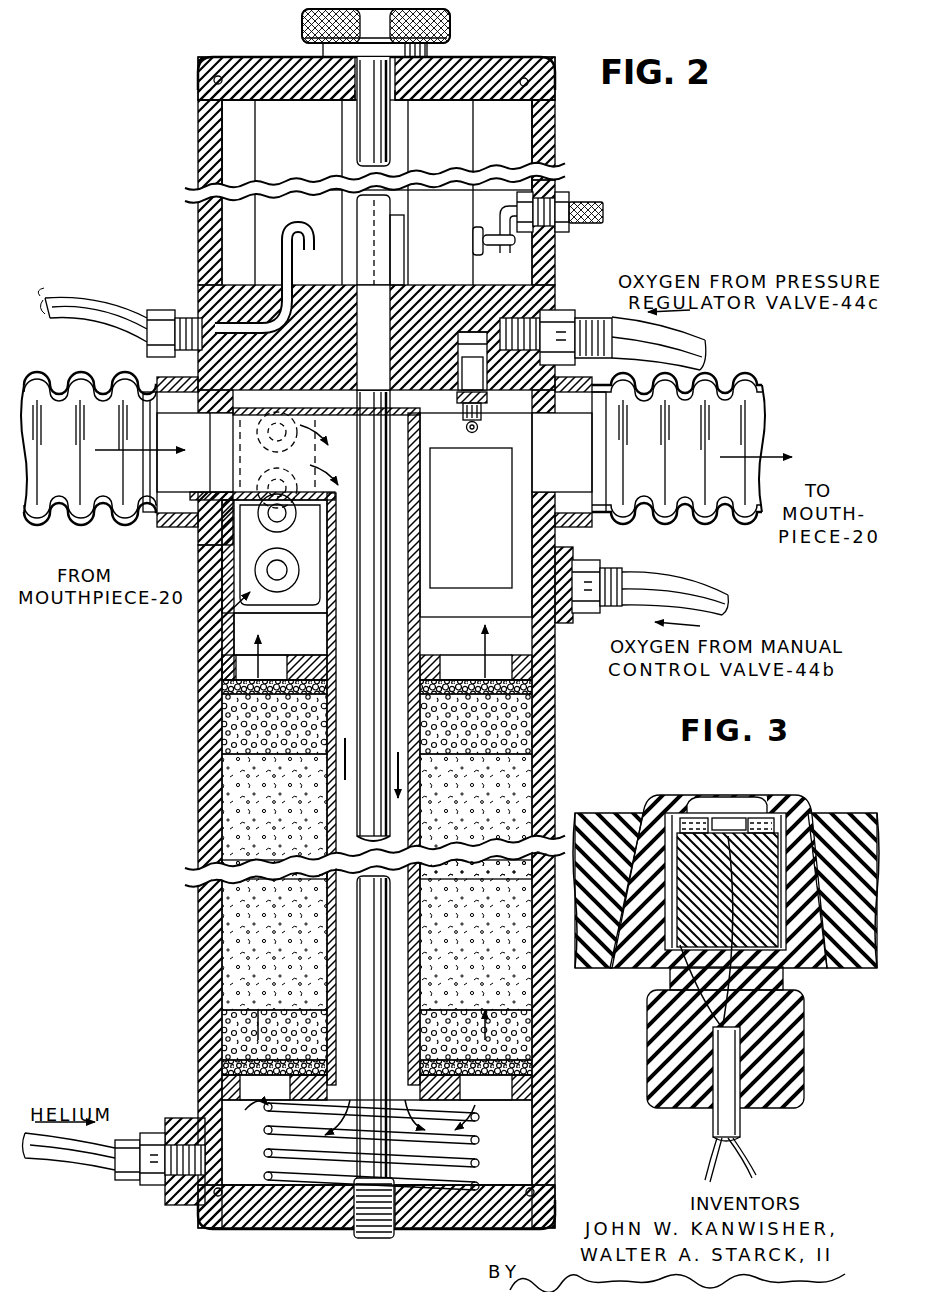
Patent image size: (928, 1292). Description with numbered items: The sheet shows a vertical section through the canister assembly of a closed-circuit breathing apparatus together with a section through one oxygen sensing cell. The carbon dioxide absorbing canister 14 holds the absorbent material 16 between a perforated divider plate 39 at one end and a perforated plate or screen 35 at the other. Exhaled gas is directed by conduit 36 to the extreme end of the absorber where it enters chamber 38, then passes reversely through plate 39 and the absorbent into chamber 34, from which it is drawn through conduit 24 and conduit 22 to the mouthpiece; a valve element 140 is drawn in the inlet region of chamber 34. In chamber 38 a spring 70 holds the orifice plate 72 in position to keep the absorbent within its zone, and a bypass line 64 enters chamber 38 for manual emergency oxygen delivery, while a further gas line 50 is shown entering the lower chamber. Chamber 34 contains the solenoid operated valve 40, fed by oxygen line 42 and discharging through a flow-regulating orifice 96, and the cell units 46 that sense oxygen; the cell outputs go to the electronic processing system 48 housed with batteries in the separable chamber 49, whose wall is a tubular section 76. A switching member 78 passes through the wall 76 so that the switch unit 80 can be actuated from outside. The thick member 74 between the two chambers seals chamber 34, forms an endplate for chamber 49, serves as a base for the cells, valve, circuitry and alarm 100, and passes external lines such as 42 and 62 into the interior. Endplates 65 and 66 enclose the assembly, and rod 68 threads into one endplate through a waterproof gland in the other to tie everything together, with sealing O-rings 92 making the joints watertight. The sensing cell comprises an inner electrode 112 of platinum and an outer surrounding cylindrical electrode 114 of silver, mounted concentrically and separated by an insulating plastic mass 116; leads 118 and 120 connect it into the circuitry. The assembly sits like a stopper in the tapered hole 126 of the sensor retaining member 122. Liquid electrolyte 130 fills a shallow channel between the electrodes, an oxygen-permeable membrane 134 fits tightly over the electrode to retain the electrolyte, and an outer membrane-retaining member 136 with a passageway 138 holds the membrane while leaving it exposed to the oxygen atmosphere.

In FIG. 2, the carbon dioxide absorbing canister 14 is at (200, 776).
In FIG. 2, the absorbent material 16 is at (240, 720).
In FIG. 2, the conduit 22 is at (80, 370).
In FIG. 2, the conduit 24 is at (730, 372).
In FIG. 2, the chamber 34 is at (230, 567).
In FIG. 2, the perforated plate or screen 35 is at (480, 676).
In FIG. 2, the conduit 36 is at (420, 558).
In FIG. 2, the chamber 38 is at (517, 1140).
In FIG. 2, the perforated divider plate 39 is at (475, 1088).
In FIG. 2, the solenoid operated valve 40 is at (476, 515).
In FIG. 2, the oxygen line 42 is at (680, 345).
In FIG. 2, the cell units 46 is at (200, 632).
In FIG. 2, the electronic processing system 48 is at (306, 142).
In FIG. 2, the separable chamber 49 is at (549, 132).
In FIG. 2, the helium supply hose 50 is at (75, 1165).
In FIG. 2, the external line 62 is at (125, 313).
In FIG. 2, the bypass line 64 is at (700, 585).
In FIG. 2, the endplate 65 is at (262, 57).
In FIG. 2, the endplate 66 is at (280, 1215).
In FIG. 2, the rod 68 is at (388, 132).
In FIG. 2, the spring 70 is at (480, 1162).
In FIG. 2, the orifice plate 72 is at (537, 1083).
In FIG. 2, the thick member 74 is at (445, 300).
In FIG. 2, the cylindrical or tubular section 76 is at (547, 255).
In FIG. 2, the switching member 78 is at (582, 202).
In FIG. 2, the switch unit 80 is at (494, 252).
In FIG. 2, the sealing O-ring 92 is at (524, 78).
In FIG. 2, the orifice 96 is at (470, 435).
In FIG. 2, the alarm 100 is at (400, 250).
In FIG. 2, the check valve 140 is at (250, 528).
In FIG. 3, the inner electrode 112 is at (718, 825).
In FIG. 3, the outer surrounding cylindrical electrode 114 is at (785, 978).
In FIG. 3, the insulating plastic mass 116 is at (805, 1052).
In FIG. 3, the lead 118 is at (708, 1168).
In FIG. 3, the lead 120 is at (748, 1162).
In FIG. 3, the sensor retaining member 122 is at (600, 818).
In FIG. 3, the tapered hole 126 is at (612, 968).
In FIG. 3, the liquid electrolyte 130 is at (805, 812).
In FIG. 3, the oxygen-permeable membrane 134 is at (738, 820).
In FIG. 3, the outer membrane-retaining member 136 is at (670, 797).
In FIG. 3, the passageway 138 is at (755, 805).